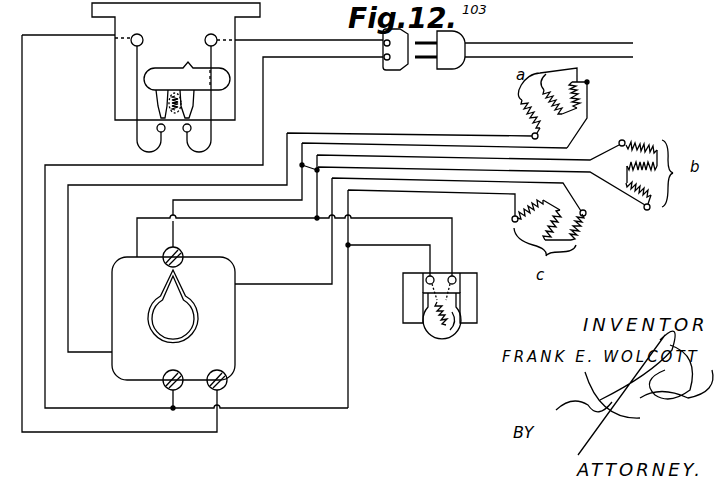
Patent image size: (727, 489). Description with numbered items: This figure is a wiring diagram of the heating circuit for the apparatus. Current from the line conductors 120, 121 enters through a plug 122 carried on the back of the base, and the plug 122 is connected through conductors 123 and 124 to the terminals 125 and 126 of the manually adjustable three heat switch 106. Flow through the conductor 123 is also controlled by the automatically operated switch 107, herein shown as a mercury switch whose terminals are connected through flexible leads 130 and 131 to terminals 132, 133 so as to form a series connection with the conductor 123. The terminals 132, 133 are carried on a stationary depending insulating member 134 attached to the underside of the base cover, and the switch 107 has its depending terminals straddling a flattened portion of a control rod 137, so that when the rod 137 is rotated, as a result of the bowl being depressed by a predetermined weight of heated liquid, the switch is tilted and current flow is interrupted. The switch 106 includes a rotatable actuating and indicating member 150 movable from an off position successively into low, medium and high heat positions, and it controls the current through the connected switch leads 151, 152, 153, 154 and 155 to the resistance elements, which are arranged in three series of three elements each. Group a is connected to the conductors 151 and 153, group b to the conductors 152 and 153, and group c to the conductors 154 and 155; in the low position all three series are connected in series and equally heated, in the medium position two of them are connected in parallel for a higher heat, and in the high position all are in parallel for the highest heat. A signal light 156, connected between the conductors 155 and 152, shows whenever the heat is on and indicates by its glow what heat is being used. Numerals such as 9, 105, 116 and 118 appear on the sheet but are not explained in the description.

The housing 9 is at (662, 12).
The body 105 is at (632, 12).
The manually adjustable three heat switch 106 is at (243, 334).
The automatically operated switch 107 is at (170, 61).
The switch 116 is at (587, 9).
The cover 118 is at (542, 9).
The line conductor 120 is at (620, 43).
The line conductor 121 is at (620, 57).
The plug 122 is at (405, 70).
The conductor 123 is at (291, 41).
The conductor 124 is at (307, 58).
The terminal 125 is at (226, 388).
The terminal 126 is at (164, 388).
The flexible lead 130 is at (135, 135).
The flexible lead 131 is at (212, 138).
The terminal 132 is at (133, 44).
The terminal 133 is at (219, 39).
The depending insulating member 134 is at (118, 21).
The control rod 137 is at (172, 112).
The rotatable actuating and indicating member 150 is at (155, 317).
The switch lead 151 is at (70, 296).
The switch lead 152 is at (137, 229).
The switch lead 153 is at (178, 241).
The switch lead 154 is at (251, 285).
The switch lead 155 is at (269, 408).
The signal light 156 is at (428, 333).